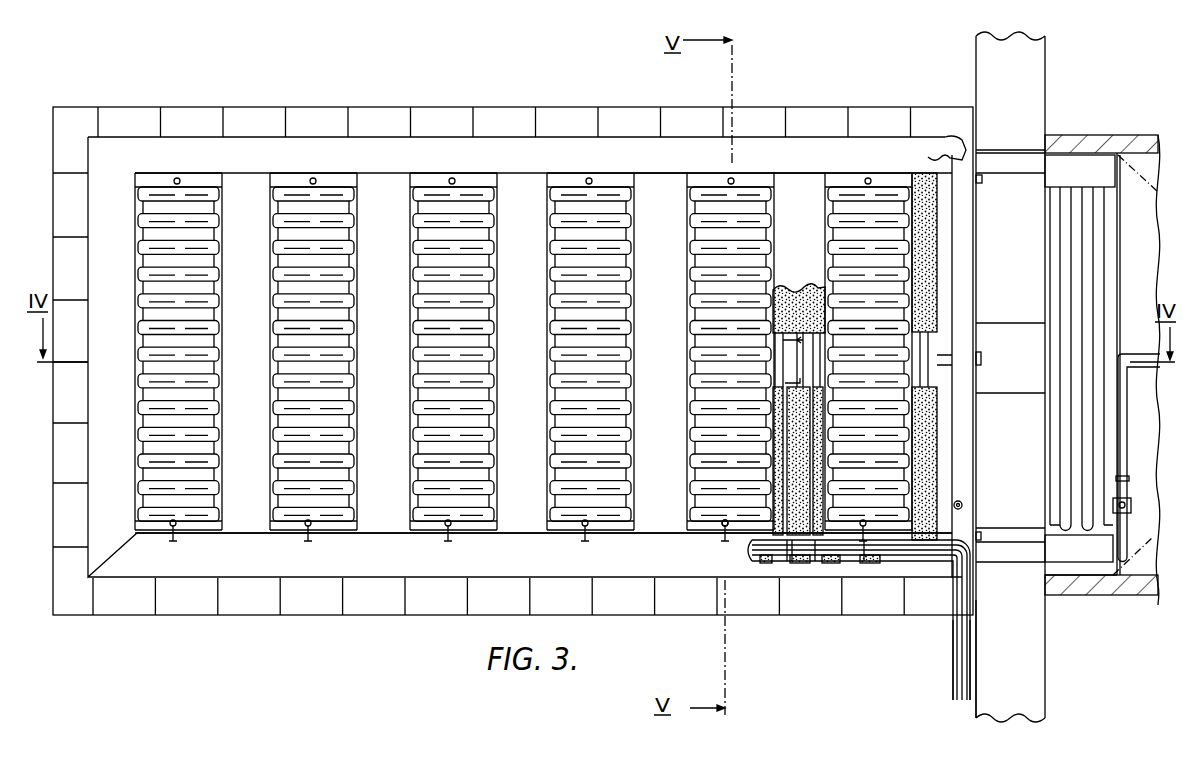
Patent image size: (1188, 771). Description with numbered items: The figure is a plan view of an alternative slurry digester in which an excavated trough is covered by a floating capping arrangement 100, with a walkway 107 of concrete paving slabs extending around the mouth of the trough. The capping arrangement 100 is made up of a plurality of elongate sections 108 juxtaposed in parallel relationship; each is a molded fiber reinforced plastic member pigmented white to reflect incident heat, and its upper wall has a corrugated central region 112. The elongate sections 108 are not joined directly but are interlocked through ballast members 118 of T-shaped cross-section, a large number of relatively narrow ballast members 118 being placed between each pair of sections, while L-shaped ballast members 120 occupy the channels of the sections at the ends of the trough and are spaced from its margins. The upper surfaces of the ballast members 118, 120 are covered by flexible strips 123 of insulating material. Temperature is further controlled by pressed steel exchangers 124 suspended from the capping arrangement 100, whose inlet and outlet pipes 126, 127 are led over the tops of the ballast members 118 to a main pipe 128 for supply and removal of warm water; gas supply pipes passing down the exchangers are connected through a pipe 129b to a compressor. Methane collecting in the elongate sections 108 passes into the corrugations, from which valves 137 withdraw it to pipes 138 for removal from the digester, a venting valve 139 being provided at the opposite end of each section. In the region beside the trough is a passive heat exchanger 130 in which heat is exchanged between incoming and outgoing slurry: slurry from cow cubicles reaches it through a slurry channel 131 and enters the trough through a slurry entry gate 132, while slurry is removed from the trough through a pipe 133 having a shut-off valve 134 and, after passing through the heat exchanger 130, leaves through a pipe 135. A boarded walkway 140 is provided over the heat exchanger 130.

The capping arrangement 100 is at (538, 476).
The walkway 107 is at (566, 107).
The elongate section 108 is at (187, 460).
The central region 112 is at (297, 483).
The ballast member 118 is at (792, 562).
The L-shaped ballast member 120 is at (937, 556).
The flexible strip 123 is at (658, 200).
The pressed steel exchanger 124 is at (787, 340).
The inlet pipe 126 is at (788, 548).
The outlet pipe 127 is at (810, 362).
The main pipe 128 is at (750, 558).
The pipe 129b is at (815, 545).
The passive heat exchanger 130 is at (1102, 266).
The slurry channel 131 is at (1036, 637).
The slurry entry gate 132 is at (1112, 198).
The pipe 133 is at (1137, 352).
The shut-off valve 134 is at (1117, 508).
The pipe 135 is at (955, 680).
The valve 137 is at (722, 525).
The pipe 138 is at (864, 553).
The venting valve 139 is at (452, 178).
The boarded walkway 140 is at (1003, 202).